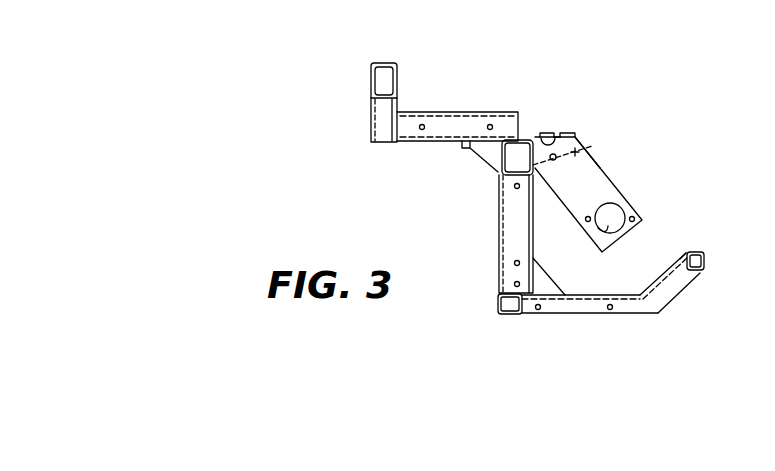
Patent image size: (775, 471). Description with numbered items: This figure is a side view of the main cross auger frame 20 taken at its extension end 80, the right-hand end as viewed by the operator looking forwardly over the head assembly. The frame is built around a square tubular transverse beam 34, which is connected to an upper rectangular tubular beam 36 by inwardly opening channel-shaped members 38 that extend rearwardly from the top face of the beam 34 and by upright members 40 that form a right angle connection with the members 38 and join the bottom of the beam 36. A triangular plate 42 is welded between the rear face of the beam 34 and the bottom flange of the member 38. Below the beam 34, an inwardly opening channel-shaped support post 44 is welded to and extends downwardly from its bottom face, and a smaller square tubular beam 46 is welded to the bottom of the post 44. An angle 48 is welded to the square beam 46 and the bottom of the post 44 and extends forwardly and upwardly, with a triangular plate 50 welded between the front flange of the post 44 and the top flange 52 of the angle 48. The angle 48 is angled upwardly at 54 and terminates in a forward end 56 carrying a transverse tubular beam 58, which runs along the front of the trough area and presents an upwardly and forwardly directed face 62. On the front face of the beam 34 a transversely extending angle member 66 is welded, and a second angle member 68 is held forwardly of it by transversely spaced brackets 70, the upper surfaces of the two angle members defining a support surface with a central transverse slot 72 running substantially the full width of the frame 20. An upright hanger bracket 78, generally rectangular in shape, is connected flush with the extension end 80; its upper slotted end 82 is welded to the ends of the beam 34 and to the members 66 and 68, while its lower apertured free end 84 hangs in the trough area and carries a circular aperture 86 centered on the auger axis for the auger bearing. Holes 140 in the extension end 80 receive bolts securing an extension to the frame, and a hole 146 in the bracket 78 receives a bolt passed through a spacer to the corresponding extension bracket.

The main cross auger frame 20 is at (625, 78).
The square tubular transverse beam 34 is at (522, 138).
The upper rectangular tubular beam 36 is at (371, 77).
The channel-shaped member 38 is at (463, 117).
The upright member 40 is at (371, 123).
The triangular plate 42 is at (484, 161).
The support post 44 is at (499, 201).
The square tubular beam 46 is at (498, 303).
The angle 48 is at (635, 318).
The triangular plate 50 is at (545, 272).
The top flange 52 is at (574, 293).
The upwardly angled portion 54 is at (640, 296).
The forward end 56 is at (684, 256).
The transverse tubular beam 58 is at (707, 268).
The upwardly and forwardly directed face 62 is at (700, 252).
The angle member 66 is at (549, 132).
The second angle member 68 is at (566, 136).
The bracket 70 is at (590, 151).
The central transverse slot 72 is at (560, 130).
The upright hanger bracket 78 is at (620, 190).
The extension end 80 is at (419, 78).
The upper slotted end 82 is at (580, 148).
The lower apertured free end 84 is at (637, 217).
The circular aperture 86 is at (600, 233).
The holes 140 is at (517, 262).
The hole 146 is at (553, 161).